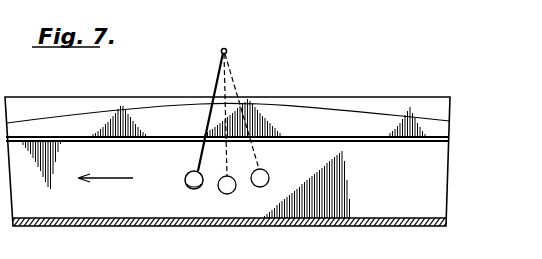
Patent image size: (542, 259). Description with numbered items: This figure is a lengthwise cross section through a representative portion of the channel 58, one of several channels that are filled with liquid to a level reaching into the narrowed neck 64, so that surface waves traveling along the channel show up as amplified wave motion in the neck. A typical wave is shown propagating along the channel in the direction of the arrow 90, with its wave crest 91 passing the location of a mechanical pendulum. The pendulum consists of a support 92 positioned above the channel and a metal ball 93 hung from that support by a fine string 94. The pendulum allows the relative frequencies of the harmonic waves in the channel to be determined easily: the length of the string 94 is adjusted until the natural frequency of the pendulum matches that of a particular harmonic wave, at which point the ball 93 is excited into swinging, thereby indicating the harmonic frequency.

The channel 58 is at (137, 232).
The narrowed neck 64 is at (376, 107).
The arrow 90 is at (103, 178).
The wave crest 91 is at (237, 93).
The support 92 is at (227, 50).
The metal ball 93 is at (186, 186).
The fine string 94 is at (214, 86).